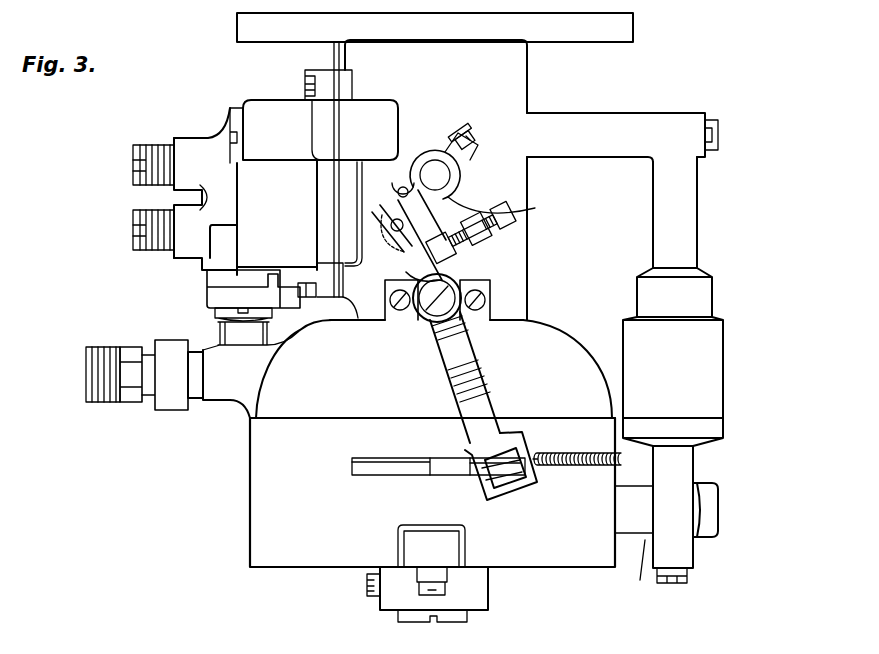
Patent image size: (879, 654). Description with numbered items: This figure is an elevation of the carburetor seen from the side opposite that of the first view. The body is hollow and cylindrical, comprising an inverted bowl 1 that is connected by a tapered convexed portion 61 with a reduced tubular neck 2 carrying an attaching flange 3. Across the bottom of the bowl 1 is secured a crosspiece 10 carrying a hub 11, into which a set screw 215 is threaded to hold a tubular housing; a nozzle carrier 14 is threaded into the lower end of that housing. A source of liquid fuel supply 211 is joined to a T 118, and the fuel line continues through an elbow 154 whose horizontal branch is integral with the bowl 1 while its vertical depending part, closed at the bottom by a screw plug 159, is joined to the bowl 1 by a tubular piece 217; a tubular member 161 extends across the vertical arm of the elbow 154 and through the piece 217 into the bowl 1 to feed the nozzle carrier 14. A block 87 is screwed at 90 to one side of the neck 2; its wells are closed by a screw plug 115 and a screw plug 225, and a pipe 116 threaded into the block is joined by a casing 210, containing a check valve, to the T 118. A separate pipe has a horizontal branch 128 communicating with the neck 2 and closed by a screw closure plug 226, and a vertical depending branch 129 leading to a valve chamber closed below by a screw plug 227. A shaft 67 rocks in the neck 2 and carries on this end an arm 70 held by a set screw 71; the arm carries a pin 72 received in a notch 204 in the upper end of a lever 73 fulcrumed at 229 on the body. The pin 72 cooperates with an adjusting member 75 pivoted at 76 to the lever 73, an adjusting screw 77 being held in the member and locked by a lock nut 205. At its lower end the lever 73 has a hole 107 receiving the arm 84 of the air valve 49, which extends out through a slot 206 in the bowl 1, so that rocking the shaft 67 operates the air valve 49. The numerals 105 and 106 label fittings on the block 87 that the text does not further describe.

The inverted bowl 1 is at (265, 518).
The tubular neck 2 is at (510, 67).
The attaching flange 3 is at (247, 22).
The crosspiece 10 is at (442, 575).
The hub 11 is at (475, 598).
The nozzle carrier 14 is at (455, 618).
The air valve 49 is at (385, 468).
The tapered convexed portion 61 is at (332, 340).
The shaft 67 is at (437, 175).
The arm 70 is at (392, 183).
The set screw 71 is at (472, 140).
The pin 72 is at (381, 244).
The lever 73 is at (455, 345).
The adjusting member 75 is at (491, 193).
The pivot 76 is at (412, 178).
The adjusting screw 77 is at (515, 225).
The arm 84 is at (458, 470).
The block 87 is at (320, 115).
The screw 90 is at (322, 68).
The threaded fitting 105 is at (152, 150).
The threaded fitting 106 is at (135, 250).
The hole 107 is at (512, 435).
The screw plug 115 is at (218, 318).
The pipe 116 is at (200, 268).
The T 118 is at (232, 405).
The horizontal branch 128 is at (640, 118).
The vertical depending branch 129 is at (683, 222).
The elbow 154 is at (680, 465).
The screw plug 159 is at (690, 577).
The tubular member 161 is at (718, 510).
The notch 204 is at (380, 200).
The lock nut 205 is at (490, 240).
The slot 206 is at (365, 458).
The casing 210 is at (240, 330).
The source of liquid fuel supply 211 is at (102, 404).
The set screw 215 is at (367, 585).
The tubular piece 217 is at (645, 540).
The screw plug 225 is at (240, 276).
The screw closure plug 226 is at (722, 124).
The screw plug 227 is at (725, 434).
The fulcrum 229 is at (422, 322).